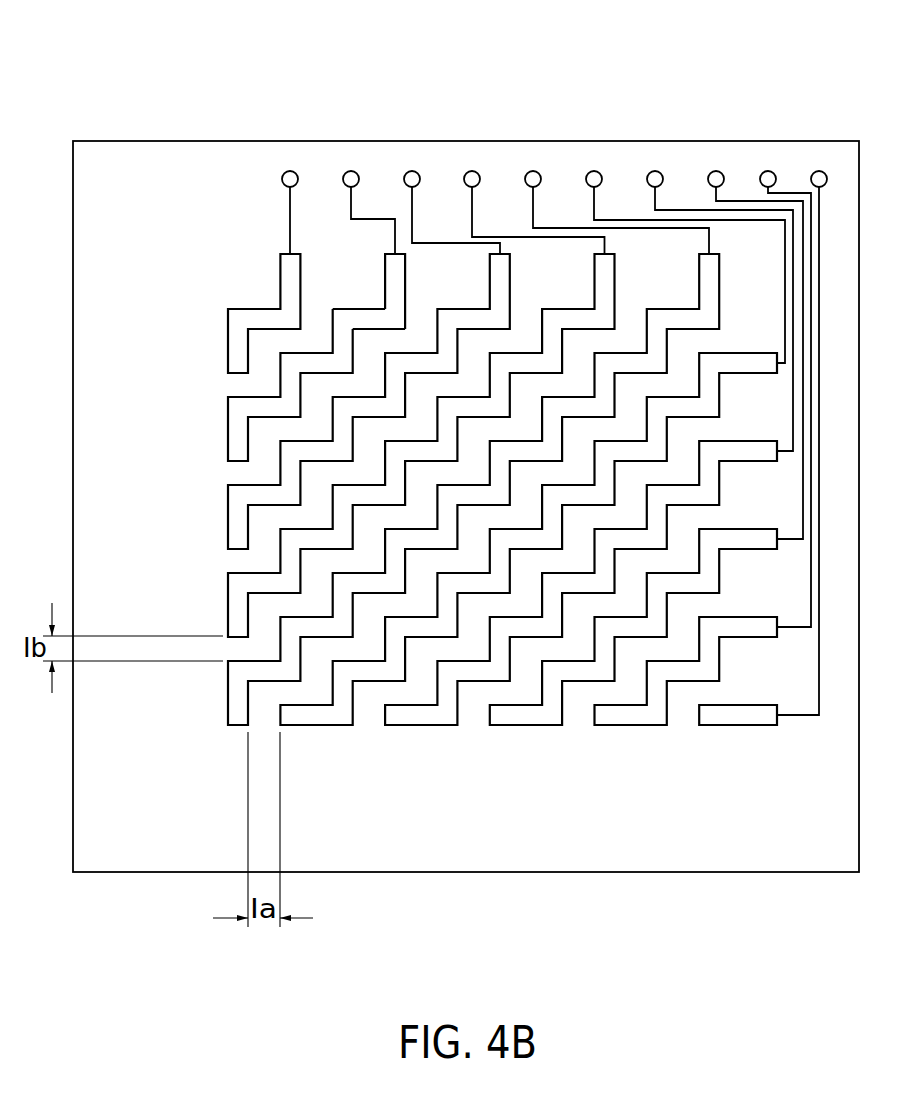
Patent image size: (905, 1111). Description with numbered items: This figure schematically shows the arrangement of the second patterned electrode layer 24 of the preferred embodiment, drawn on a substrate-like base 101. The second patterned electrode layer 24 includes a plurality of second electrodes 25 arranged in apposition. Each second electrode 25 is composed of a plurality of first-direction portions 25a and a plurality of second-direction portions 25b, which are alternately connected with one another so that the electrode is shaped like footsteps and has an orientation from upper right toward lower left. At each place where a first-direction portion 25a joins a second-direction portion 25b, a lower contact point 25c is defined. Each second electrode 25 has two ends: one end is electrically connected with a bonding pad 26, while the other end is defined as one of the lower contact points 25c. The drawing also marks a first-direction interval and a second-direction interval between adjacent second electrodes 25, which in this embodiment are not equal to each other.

The substrate 101 is at (73, 202).
The second patterned electrode layer 24 is at (222, 417).
The second electrode 25 is at (386, 237).
The first-direction portion 25a is at (355, 310).
The second-direction portion 25b is at (404, 269).
The lower contact point 25c is at (343, 325).
The bonding pad 26 is at (346, 174).